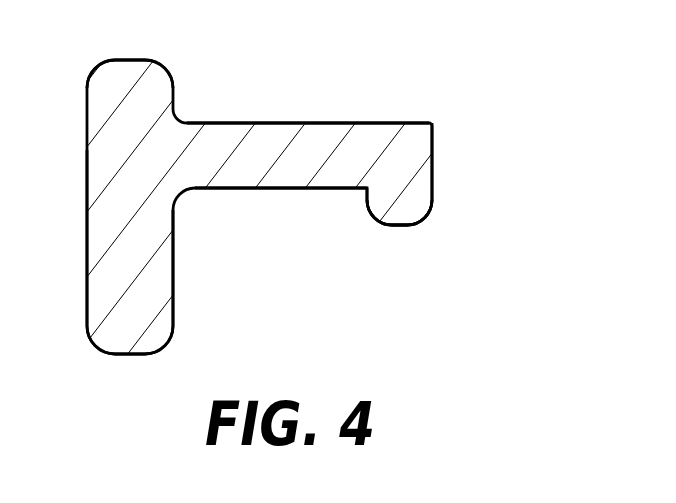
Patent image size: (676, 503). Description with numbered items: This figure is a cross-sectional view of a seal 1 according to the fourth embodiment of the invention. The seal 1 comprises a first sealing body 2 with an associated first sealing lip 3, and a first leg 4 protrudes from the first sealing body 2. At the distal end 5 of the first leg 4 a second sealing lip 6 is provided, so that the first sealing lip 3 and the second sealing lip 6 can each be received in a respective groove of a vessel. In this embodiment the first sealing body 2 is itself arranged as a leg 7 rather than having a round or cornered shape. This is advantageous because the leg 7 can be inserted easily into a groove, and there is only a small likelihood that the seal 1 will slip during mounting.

The seal 1 is at (512, 38).
The first sealing body 2 is at (130, 157).
The first sealing lip 3 is at (130, 353).
The first leg 4 is at (287, 148).
The distal end 5 is at (463, 117).
The second sealing lip 6 is at (400, 225).
The leg 7 is at (130, 252).